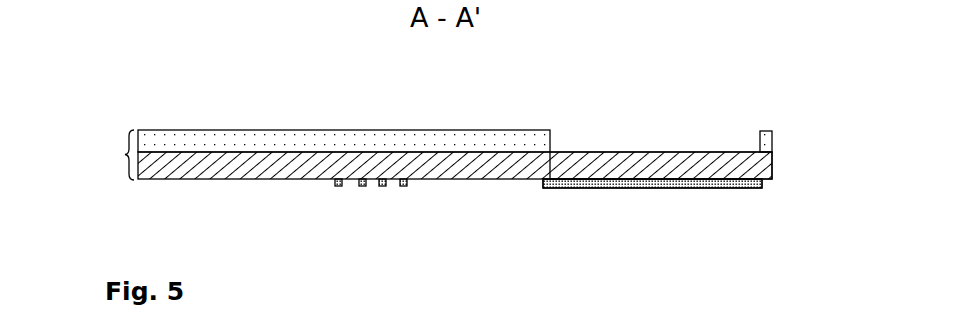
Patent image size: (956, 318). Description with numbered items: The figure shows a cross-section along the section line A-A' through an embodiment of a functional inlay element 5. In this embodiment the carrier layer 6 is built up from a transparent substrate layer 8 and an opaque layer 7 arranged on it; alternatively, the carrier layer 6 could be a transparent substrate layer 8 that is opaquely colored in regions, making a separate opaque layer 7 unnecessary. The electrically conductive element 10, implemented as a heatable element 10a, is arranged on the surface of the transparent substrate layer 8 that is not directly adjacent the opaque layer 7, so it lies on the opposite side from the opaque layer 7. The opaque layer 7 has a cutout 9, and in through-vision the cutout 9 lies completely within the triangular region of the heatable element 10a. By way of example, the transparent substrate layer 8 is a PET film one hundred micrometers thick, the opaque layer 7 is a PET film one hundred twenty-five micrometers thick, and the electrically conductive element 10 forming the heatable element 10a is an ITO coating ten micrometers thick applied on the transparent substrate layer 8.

The functional inlay element 5 is at (136, 70).
The carrier layer 6 is at (125, 153).
The opaque layer 7 is at (222, 146).
The transparent substrate layer 8 is at (262, 173).
The cutout 9 is at (612, 147).
The electrically conductive element 10 is at (403, 186).
The heatable element 10a is at (652, 183).